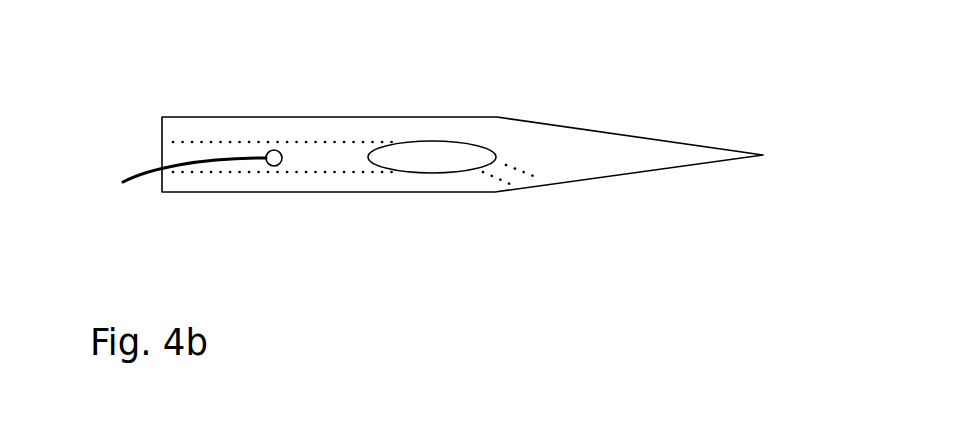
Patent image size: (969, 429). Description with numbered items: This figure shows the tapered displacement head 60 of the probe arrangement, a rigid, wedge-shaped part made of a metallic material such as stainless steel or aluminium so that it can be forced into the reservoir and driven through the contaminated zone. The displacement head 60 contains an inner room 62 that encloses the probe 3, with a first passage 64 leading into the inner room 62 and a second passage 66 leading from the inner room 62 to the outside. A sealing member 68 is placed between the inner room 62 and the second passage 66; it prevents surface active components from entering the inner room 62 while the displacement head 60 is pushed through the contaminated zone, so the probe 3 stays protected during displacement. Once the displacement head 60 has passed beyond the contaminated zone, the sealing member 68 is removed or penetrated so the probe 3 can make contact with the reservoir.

The tapered displacement head 60 is at (598, 70).
The inner room 62 is at (325, 151).
The first passage 64 is at (188, 150).
The second passage 66 is at (503, 173).
The sealing member 68 is at (420, 149).
The probe 3 is at (272, 150).